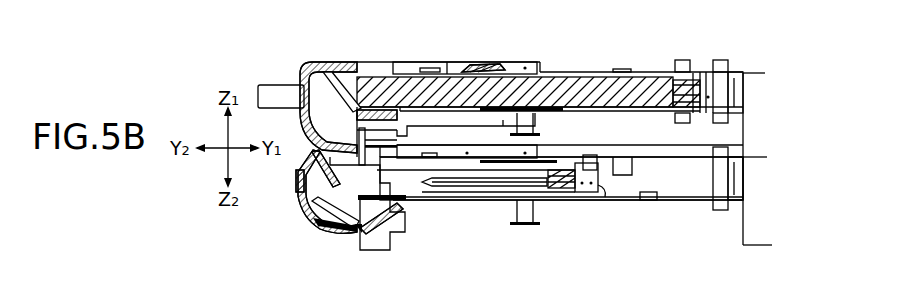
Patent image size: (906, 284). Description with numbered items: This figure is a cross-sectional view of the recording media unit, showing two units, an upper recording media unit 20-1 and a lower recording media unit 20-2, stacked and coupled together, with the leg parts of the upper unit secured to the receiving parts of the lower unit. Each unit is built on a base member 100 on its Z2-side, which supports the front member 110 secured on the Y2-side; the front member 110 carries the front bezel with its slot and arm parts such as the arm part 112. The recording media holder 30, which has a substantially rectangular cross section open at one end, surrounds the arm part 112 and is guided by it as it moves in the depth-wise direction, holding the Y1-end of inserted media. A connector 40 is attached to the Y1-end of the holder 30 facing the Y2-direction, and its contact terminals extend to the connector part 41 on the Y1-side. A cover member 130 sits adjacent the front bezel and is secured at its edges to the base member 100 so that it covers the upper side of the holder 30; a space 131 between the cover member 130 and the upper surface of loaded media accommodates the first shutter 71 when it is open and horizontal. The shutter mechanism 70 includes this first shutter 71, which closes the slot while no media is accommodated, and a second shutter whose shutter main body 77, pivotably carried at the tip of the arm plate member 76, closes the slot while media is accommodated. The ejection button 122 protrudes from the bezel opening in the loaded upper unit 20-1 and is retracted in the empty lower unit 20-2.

The upper recording media unit 20-1 is at (625, 60).
The lower recording media unit 20-2 is at (648, 215).
The recording media holder 30 is at (468, 201).
The connector 40 is at (558, 201).
The connector part 41 is at (607, 208).
The shutter mechanism 70 is at (296, 210).
The first shutter 71 is at (500, 68).
The arm plate member 76 is at (384, 223).
The shutter main body 77 is at (303, 76).
The base member 100 is at (680, 203).
The front member 110 is at (322, 62).
The arm part 112 is at (345, 232).
The ejection button 122 is at (268, 83).
The cover member 130 is at (422, 62).
The space 131 is at (464, 64).